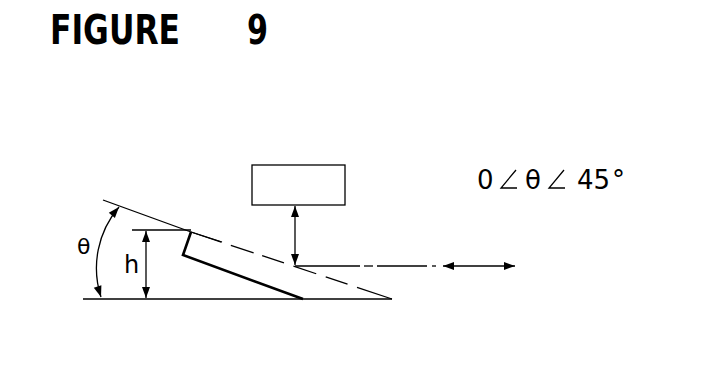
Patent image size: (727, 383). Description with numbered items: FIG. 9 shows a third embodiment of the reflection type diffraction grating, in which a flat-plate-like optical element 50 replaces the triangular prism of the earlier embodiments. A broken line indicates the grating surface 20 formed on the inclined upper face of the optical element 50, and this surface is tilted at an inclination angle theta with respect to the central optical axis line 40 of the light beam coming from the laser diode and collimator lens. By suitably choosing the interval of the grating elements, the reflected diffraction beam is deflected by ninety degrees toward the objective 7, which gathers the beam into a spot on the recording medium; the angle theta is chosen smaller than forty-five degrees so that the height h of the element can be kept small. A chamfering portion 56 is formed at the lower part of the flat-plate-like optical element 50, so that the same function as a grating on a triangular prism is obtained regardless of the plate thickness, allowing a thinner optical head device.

The objective 7 is at (346, 183).
The grating surface 20 is at (223, 240).
The flat-plate-like optical element 50 is at (255, 268).
The chamfering portion 56 is at (348, 301).
The central optical axis line 40 is at (501, 266).